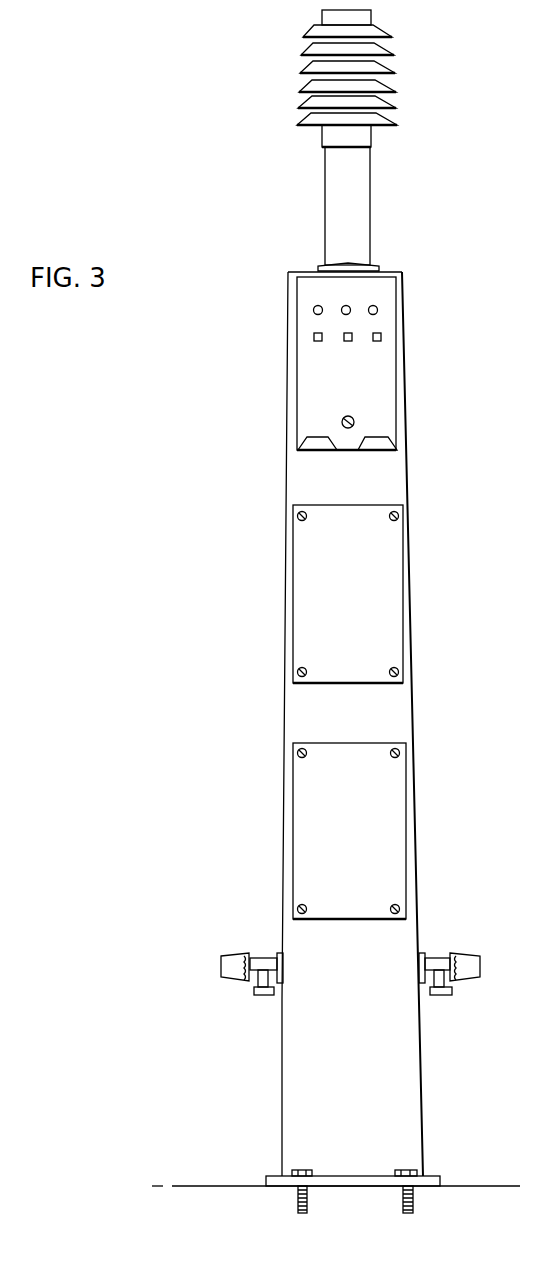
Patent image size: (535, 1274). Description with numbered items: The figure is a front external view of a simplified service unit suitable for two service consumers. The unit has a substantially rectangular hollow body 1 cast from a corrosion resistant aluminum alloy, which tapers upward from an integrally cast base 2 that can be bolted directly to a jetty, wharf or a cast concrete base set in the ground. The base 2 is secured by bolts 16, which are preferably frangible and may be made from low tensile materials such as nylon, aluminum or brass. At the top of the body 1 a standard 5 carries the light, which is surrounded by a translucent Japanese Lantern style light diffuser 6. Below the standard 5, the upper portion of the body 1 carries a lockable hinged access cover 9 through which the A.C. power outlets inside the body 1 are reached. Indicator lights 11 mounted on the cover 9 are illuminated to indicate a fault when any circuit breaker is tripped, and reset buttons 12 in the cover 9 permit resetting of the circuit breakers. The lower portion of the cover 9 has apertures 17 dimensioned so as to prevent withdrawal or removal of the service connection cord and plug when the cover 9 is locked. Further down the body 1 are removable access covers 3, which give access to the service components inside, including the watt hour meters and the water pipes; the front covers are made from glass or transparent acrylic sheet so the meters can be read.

The hollow body 1 is at (287, 703).
The base 2 is at (432, 1178).
The access covers 3 is at (384, 584).
The standard 5 is at (358, 226).
The light diffuser 6 is at (373, 100).
The lockable hinged access cover 9 is at (310, 384).
The indicator lights 11 is at (350, 306).
The reset buttons 12 is at (350, 341).
The bolts 16 is at (298, 1200).
The apertures 17 is at (312, 441).